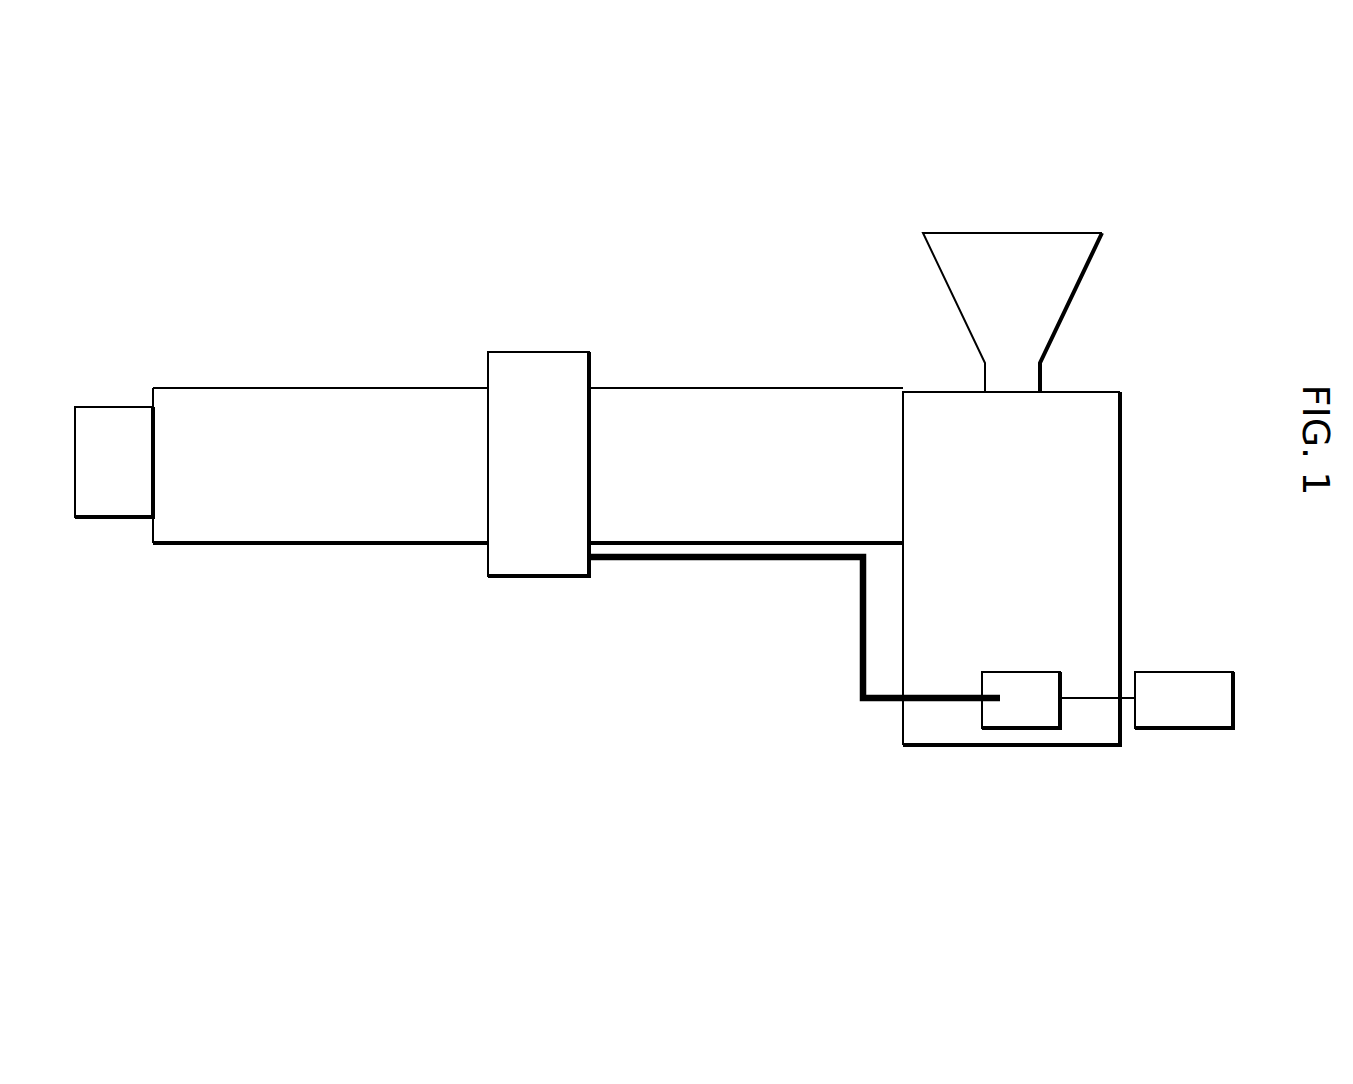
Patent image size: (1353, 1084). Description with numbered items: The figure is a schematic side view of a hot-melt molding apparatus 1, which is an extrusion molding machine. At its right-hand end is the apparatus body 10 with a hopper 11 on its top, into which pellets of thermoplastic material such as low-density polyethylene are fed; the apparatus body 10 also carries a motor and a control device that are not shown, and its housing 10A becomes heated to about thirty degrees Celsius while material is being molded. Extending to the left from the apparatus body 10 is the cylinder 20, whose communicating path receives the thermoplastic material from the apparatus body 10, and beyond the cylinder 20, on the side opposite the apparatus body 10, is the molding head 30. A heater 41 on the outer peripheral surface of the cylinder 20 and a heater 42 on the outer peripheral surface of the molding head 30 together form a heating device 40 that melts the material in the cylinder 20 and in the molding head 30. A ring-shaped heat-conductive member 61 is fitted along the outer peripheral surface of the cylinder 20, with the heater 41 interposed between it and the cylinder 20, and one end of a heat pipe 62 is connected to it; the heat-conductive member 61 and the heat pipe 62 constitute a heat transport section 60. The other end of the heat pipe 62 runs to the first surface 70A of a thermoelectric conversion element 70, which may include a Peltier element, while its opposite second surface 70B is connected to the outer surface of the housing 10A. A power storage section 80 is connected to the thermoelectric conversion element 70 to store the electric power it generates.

The hot-melt molding apparatus 1 is at (1228, 164).
The apparatus body 10 is at (1103, 428).
The housing 10A is at (1097, 543).
The hopper 11 is at (1050, 288).
The cylinder 20 is at (627, 438).
The molding head 30 is at (102, 422).
The heating device 40 is at (320, 291).
The heater 41 is at (222, 403).
The heater 42 is at (132, 420).
The heat transport section 60 is at (625, 680).
The heat-conductive member 61 is at (547, 553).
The heat pipe 62 is at (655, 562).
The thermoelectric conversion element 70 is at (1013, 712).
The first surface 70A is at (993, 715).
The second surface 70B is at (1040, 712).
The power storage section 80 is at (1188, 717).